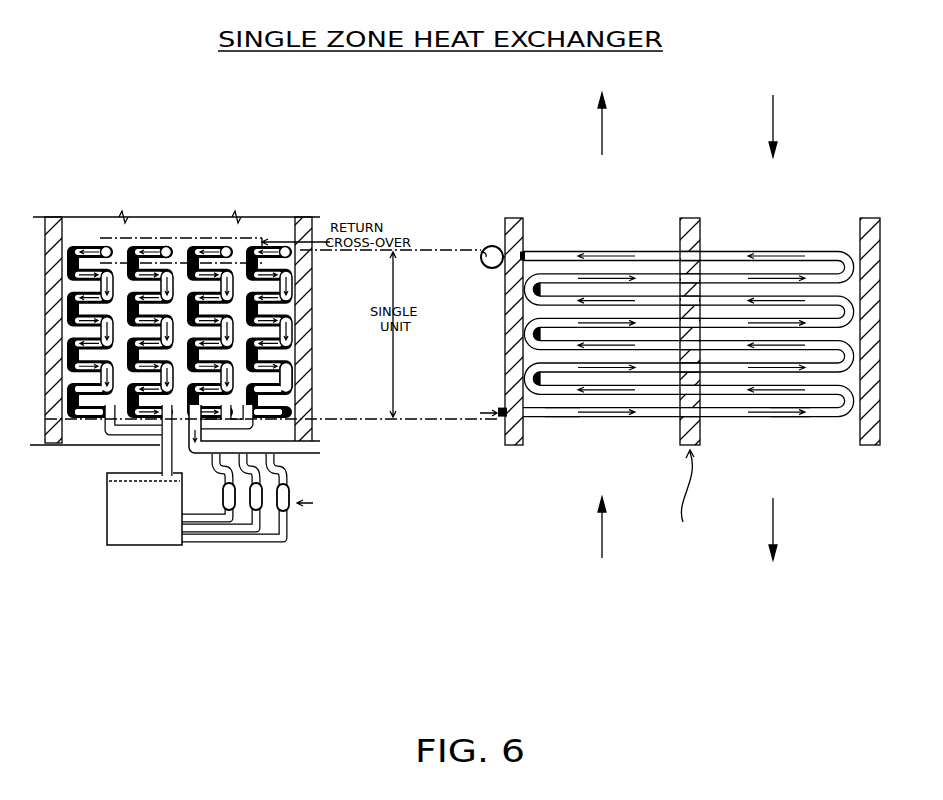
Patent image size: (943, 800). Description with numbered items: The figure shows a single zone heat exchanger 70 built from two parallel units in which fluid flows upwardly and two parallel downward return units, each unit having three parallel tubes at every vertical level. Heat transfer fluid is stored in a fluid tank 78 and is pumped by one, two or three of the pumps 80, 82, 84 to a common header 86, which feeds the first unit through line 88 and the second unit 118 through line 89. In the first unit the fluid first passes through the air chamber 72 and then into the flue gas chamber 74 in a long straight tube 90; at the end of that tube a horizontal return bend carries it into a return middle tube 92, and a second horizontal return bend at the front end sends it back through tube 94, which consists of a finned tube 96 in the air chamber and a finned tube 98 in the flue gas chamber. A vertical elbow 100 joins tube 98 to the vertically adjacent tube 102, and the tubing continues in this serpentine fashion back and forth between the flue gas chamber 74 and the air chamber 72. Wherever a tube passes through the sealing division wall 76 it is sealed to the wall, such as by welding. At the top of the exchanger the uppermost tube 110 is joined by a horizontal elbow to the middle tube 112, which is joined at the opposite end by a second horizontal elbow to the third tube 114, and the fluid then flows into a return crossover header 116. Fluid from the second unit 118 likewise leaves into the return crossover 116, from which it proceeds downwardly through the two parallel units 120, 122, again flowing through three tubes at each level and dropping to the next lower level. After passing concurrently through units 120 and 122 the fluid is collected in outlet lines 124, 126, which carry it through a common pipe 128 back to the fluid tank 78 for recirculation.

The single zone heat exchanger 70 is at (530, 126).
The air chamber 72 is at (612, 239).
The flue gas chamber 74 is at (792, 239).
The sealing division wall 76 is at (690, 218).
The fluid tank 78 is at (107, 530).
The pump 80 is at (224, 492).
The pump 82 is at (272, 520).
The pump 84 is at (289, 497).
The common header 86 is at (320, 449).
The line 88 is at (250, 428).
The line 89 is at (178, 408).
The long straight tube 90 is at (300, 397).
The return middle tube 92 is at (301, 370).
The tube 94 is at (300, 425).
The finned tube 96 is at (558, 418).
The finned tube 98 is at (788, 418).
The vertical elbow 100 is at (852, 405).
The vertically adjacent tube 102 is at (850, 393).
The uppermost tube 110 is at (296, 240).
The middle tube 112 is at (283, 249).
The third tube 114 is at (250, 236).
The return crossover header 116 is at (166, 249).
The second unit 118 is at (223, 207).
The parallel unit 120 is at (168, 207).
The parallel unit 122 is at (108, 207).
The outlet line 124 is at (67, 392).
The outlet line 126 is at (67, 420).
The common pipe 128 is at (162, 463).